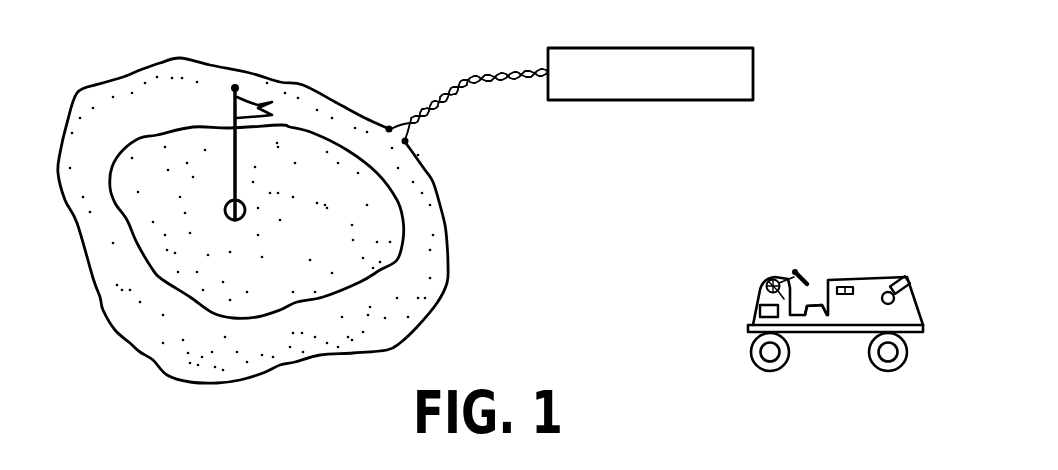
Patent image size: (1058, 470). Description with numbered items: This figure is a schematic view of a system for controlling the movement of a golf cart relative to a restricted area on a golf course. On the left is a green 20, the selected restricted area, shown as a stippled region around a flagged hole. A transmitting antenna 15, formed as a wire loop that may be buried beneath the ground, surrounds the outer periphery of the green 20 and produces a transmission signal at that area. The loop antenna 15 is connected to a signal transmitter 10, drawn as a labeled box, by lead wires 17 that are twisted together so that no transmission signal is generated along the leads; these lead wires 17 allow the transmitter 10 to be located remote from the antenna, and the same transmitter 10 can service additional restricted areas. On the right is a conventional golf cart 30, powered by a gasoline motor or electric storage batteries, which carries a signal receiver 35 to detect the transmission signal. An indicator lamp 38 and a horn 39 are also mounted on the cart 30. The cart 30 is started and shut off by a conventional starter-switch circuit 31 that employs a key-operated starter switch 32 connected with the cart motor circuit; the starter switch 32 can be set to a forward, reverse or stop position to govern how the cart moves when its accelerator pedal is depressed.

The signal transmitter 10 is at (703, 53).
The transmitting antenna 15 is at (447, 242).
The lead wires 17 is at (468, 80).
The green 20 is at (273, 311).
The golf cart 30 is at (895, 272).
The starter-switch circuit 31 is at (830, 276).
The starter switch 32 is at (843, 284).
The signal receiver 35 is at (758, 306).
The indicator lamp 38 is at (767, 277).
The horn 39 is at (882, 292).